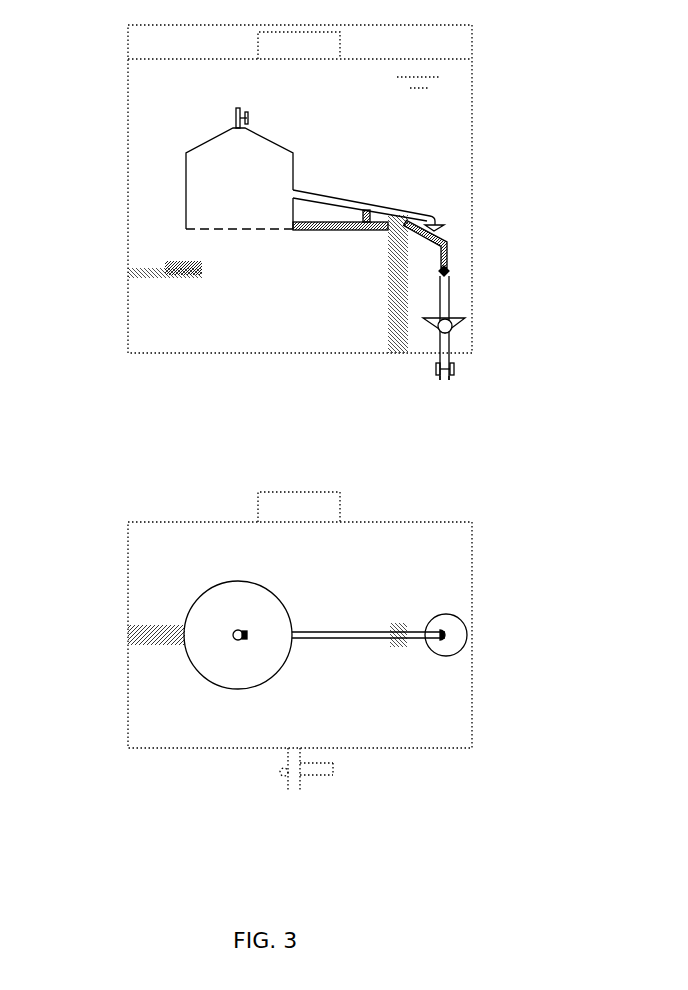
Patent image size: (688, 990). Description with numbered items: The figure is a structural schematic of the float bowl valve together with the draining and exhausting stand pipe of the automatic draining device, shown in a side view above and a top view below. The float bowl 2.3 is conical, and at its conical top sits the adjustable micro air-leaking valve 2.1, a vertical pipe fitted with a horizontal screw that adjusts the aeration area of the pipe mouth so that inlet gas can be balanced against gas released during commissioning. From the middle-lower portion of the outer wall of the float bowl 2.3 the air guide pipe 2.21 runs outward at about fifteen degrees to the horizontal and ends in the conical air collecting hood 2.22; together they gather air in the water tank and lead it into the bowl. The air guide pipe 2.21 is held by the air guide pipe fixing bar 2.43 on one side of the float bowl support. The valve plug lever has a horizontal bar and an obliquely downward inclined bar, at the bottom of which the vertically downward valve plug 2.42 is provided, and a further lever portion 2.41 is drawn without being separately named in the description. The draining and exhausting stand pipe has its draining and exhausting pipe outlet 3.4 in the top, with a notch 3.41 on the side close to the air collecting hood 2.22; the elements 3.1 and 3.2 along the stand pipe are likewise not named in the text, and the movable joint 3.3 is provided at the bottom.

The adjustable micro air-leaking valve 2.1 is at (236, 121).
The float bowl 2.3 is at (186, 190).
The air guide pipe 2.21 is at (408, 206).
The air collecting hood 2.22 is at (444, 225).
The inclined conveying pipe 2.41 is at (446, 243).
The valve plug 2.42 is at (449, 270).
The air guide pipe fixing bar 2.43 is at (365, 220).
The valve 3.1 is at (465, 322).
The connecting flange 3.2 is at (450, 358).
The movable joint 3.3 is at (453, 372).
The draining and exhausting pipe outlet 3.4 is at (449, 273).
The notch 3.41 is at (441, 272).